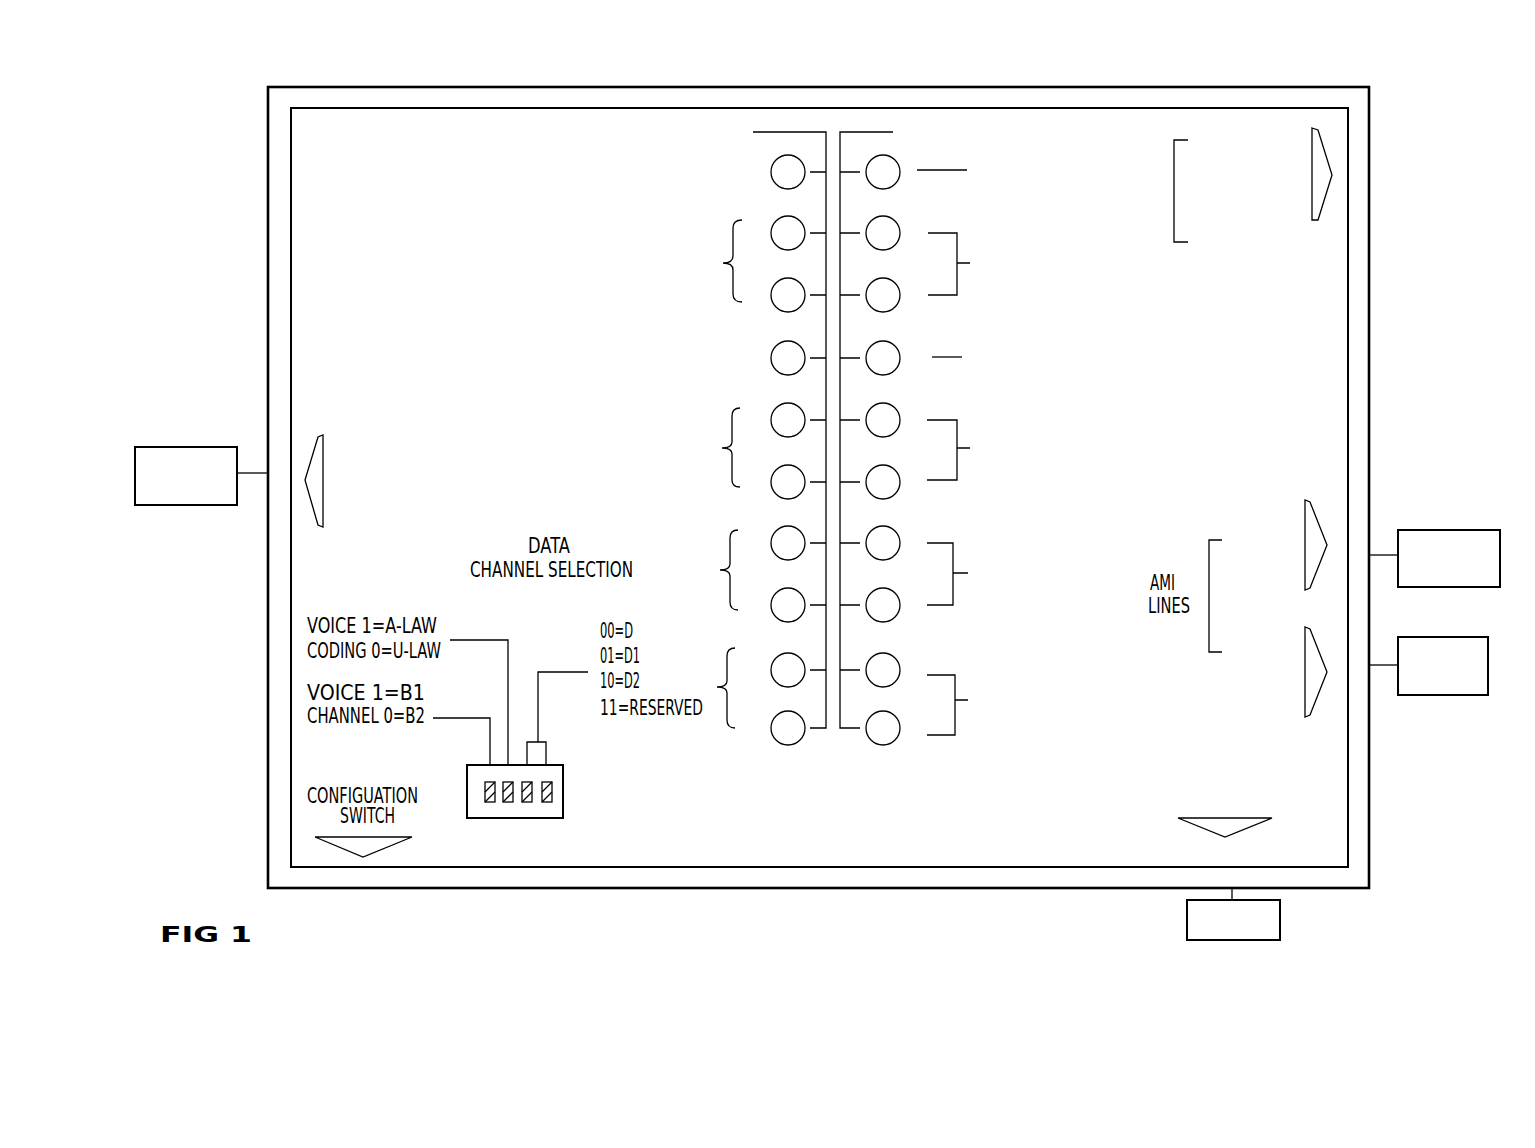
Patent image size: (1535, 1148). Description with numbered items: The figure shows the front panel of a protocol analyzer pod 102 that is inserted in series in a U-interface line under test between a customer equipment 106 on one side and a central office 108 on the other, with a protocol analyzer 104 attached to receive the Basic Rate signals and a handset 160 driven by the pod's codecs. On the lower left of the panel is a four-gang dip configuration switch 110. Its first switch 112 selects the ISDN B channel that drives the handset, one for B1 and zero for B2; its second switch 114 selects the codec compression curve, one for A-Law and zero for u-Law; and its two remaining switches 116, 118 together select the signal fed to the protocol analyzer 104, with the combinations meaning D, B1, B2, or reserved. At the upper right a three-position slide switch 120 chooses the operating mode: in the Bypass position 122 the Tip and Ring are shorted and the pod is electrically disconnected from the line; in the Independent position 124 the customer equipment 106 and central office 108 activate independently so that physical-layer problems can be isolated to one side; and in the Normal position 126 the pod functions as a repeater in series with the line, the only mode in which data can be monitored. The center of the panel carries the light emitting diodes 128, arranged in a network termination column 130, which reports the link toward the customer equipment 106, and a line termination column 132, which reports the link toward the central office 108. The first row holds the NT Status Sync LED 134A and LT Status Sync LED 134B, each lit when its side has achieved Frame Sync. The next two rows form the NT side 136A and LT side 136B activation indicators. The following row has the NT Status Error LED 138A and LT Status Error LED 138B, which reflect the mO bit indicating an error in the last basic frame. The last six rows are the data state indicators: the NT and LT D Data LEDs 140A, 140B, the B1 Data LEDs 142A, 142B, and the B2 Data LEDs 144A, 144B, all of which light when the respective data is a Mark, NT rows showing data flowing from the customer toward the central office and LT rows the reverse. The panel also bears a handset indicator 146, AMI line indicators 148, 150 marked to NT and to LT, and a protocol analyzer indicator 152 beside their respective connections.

The protocol analyzer pod 102 is at (1372, 147).
The protocol analyzer 104 is at (190, 446).
The customer equipment 106 is at (1440, 530).
The central office 108 is at (1440, 697).
The configuration switch 110 is at (555, 810).
The first switch 112 is at (490, 802).
The second switch 114 is at (508, 802).
The switch 116 is at (527, 802).
The switch 118 is at (547, 802).
The three-position slide switch 120 is at (1224, 230).
The Bypass position 122 is at (1195, 135).
The Independent position 124 is at (1288, 186).
The Normal position 126 is at (1257, 255).
The light emitting diodes 128 is at (856, 764).
The network termination (NT) column 130 is at (662, 152).
The line termination (LT) column 132 is at (1008, 129).
The NT Status Sync LED 134A is at (750, 190).
The LT Status Sync LED 134B is at (1092, 194).
The NT side activation LEDs 136A is at (711, 272).
The LT side activation LEDs 136B is at (1105, 288).
The NT Status Error LED 138A is at (740, 377).
The LT Status Error LED 138B is at (1095, 366).
The NT D Data LEDs 140A is at (706, 466).
The LT D Data LEDs 140B is at (1102, 465).
The NT B1 Data LEDs 142A is at (700, 578).
The LT B1 Data LEDs 142B is at (1095, 570).
The NT B2 Data LEDs 144A is at (705, 682).
The LT B2 Data LEDs 144B is at (1100, 692).
The handset indicator 146 is at (1258, 825).
The AMI line to NT indicator 148 is at (1320, 500).
The AMI line to LT indicator 150 is at (1318, 690).
The protocol analyzer indicator 152 is at (325, 450).
The handset 160 is at (1187, 916).